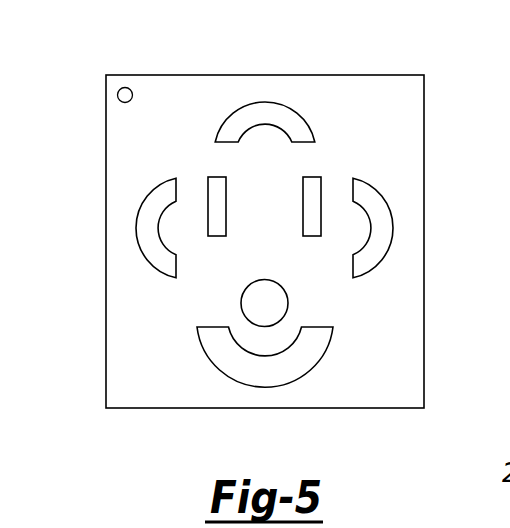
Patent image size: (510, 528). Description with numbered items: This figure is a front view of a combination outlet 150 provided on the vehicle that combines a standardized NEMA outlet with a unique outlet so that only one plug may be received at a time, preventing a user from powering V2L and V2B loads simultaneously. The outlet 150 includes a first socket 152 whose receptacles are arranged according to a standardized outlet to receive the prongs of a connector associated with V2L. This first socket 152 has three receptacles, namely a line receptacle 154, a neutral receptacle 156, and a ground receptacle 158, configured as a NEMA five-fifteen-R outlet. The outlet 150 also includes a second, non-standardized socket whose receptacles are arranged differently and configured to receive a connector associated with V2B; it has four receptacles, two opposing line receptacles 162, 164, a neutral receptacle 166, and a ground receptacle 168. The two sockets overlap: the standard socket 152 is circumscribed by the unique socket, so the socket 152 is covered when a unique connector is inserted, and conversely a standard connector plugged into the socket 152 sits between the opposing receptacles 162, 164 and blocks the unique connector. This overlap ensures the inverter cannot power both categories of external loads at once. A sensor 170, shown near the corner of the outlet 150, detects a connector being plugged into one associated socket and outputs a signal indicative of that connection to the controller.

The combination outlet 150 is at (345, 75).
The first socket 152 is at (328, 164).
The line receptacle 154 is at (217, 177).
The neutral receptacle 156 is at (311, 237).
The ground receptacle 158 is at (241, 303).
The line receptacle 162 is at (136, 228).
The line receptacle 164 is at (394, 228).
The neutral receptacle 166 is at (264, 102).
The ground receptacle 168 is at (263, 388).
The sensor 170 is at (117, 96).